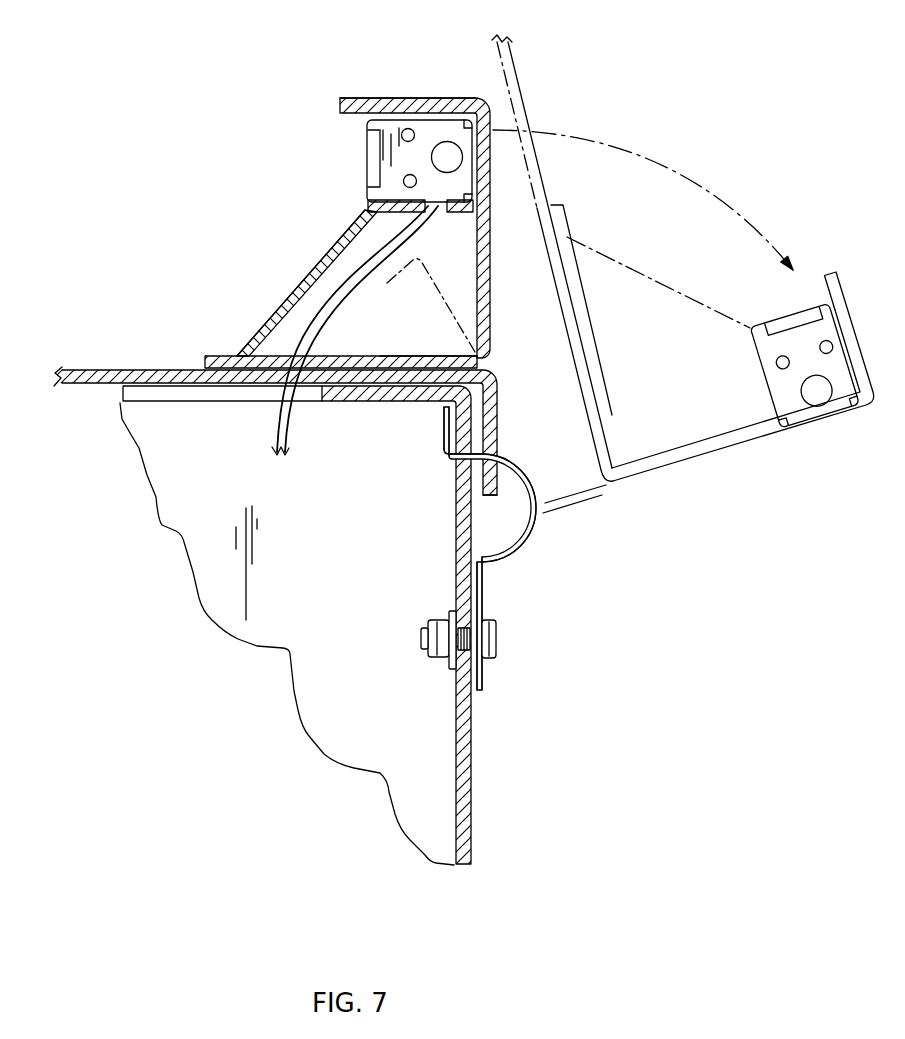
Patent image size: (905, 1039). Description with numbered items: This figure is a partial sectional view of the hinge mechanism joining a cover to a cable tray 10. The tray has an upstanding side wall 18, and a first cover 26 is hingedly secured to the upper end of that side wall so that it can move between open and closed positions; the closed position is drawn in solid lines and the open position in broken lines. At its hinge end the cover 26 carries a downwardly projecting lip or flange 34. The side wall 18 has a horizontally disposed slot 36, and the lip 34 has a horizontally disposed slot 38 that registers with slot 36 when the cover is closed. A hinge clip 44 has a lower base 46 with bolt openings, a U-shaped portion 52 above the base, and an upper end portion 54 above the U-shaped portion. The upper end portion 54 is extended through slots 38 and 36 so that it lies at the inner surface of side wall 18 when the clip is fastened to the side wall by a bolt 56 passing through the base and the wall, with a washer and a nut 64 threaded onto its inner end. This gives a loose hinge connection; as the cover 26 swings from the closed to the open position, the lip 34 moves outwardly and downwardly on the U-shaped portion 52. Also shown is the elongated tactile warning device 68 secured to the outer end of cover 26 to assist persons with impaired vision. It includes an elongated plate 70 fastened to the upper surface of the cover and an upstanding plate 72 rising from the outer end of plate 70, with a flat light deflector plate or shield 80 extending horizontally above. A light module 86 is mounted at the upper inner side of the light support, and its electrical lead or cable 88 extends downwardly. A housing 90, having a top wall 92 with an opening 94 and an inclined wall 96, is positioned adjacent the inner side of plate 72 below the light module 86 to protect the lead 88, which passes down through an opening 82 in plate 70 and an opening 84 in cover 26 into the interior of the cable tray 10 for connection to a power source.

The cable tray 10 is at (185, 607).
The side wall 18 is at (477, 742).
The first cover 26 is at (528, 90).
The lip or flange 34 is at (500, 392).
The slot 36 is at (443, 458).
The slot 38 is at (493, 443).
The hinge clip 44 is at (520, 570).
The lower base 46 is at (483, 600).
The U-shaped portion 52 is at (533, 538).
The upper end portion 54 is at (444, 418).
The bolt 56 is at (496, 642).
The nut 64 is at (430, 655).
The tactile warning device 68 is at (425, 88).
The elongated plate 70 is at (393, 358).
The upstanding plate 72 is at (490, 268).
The light deflector plate or shield 80 is at (348, 98).
The opening 82 is at (277, 362).
The opening 84 is at (262, 386).
The light module 86 is at (367, 168).
The electrical lead or cable 88 is at (416, 243).
The housing 90 is at (305, 243).
The top wall 92 is at (420, 200).
The opening 94 is at (362, 232).
The inclined wall 96 is at (300, 278).